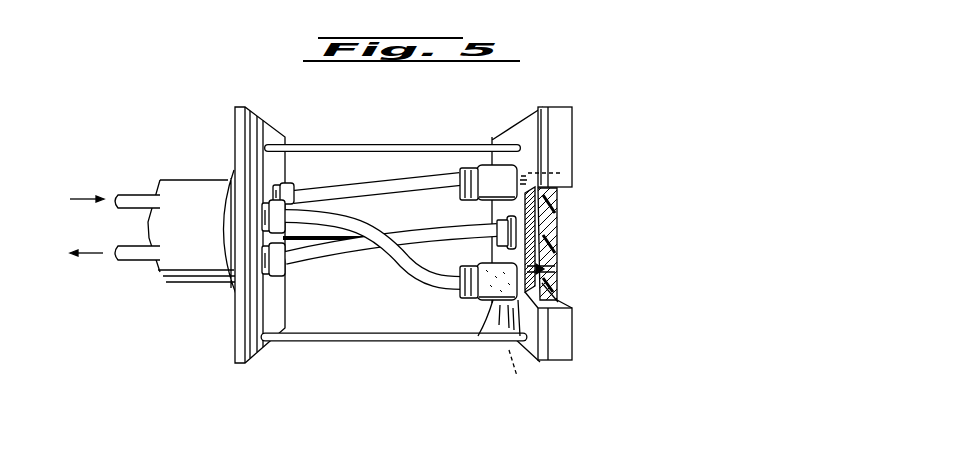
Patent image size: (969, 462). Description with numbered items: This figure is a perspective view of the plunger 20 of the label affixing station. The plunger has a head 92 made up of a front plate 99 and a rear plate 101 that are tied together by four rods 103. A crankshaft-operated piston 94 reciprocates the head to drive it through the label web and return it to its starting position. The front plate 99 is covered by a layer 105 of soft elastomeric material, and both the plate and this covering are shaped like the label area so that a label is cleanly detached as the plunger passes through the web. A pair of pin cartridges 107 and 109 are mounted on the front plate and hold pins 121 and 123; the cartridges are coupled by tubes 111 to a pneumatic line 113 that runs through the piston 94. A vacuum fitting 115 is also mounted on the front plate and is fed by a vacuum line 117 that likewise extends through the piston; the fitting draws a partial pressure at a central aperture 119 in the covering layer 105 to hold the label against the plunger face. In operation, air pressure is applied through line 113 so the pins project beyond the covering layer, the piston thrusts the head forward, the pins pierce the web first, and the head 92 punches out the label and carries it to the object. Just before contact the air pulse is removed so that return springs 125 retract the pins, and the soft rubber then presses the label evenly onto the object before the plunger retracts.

The plunger 20 is at (573, 113).
The head 92 is at (570, 331).
The crankshaft-operated piston 94 is at (198, 187).
The front plate 99 is at (541, 110).
The rear plate 101 is at (261, 123).
The rods 103 is at (358, 146).
The layer of elastomeric material 105 is at (565, 133).
The pin cartridge 107 is at (472, 172).
The pin cartridge 109 is at (481, 307).
The tubes 111 is at (401, 187).
The pneumatic line 113 is at (137, 204).
The vacuum fitting 115 is at (497, 228).
The vacuum line 117 is at (136, 258).
The central aperture 119 is at (560, 232).
The pin 121 is at (560, 173).
The pin 123 is at (557, 267).
The return springs 125 is at (531, 373).